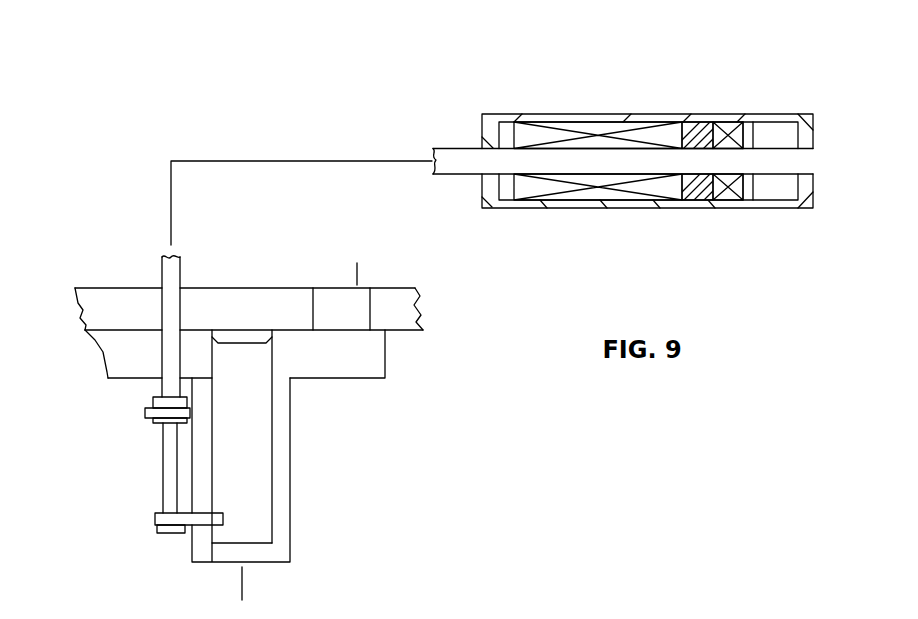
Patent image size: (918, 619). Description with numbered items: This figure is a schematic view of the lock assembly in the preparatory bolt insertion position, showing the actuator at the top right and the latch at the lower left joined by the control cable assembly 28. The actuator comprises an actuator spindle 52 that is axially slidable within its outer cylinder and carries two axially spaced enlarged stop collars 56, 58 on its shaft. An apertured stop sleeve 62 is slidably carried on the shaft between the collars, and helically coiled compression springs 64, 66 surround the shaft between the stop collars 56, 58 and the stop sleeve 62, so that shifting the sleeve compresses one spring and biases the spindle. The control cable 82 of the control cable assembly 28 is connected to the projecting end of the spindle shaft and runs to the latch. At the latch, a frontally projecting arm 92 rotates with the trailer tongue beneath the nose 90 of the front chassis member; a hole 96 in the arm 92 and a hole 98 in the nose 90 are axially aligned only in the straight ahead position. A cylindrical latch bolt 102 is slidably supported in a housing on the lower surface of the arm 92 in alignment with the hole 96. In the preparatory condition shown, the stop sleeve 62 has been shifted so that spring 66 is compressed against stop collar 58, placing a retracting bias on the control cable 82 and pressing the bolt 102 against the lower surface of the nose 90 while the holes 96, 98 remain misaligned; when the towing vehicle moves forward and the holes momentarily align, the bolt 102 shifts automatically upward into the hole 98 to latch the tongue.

The control cable assembly 28 is at (197, 162).
The actuator spindle 52 is at (460, 160).
The stop collar 56 is at (590, 130).
The stop collar 58 is at (748, 127).
The stop sleeve 62 is at (697, 128).
The compression spring 64 is at (596, 185).
The compression spring 66 is at (723, 193).
The control cable 82 is at (167, 462).
The nose 90 is at (403, 305).
The arm 92 is at (377, 352).
The hole 96 is at (272, 358).
The hole 98 is at (350, 295).
The latch pin or bolt 102 is at (263, 448).